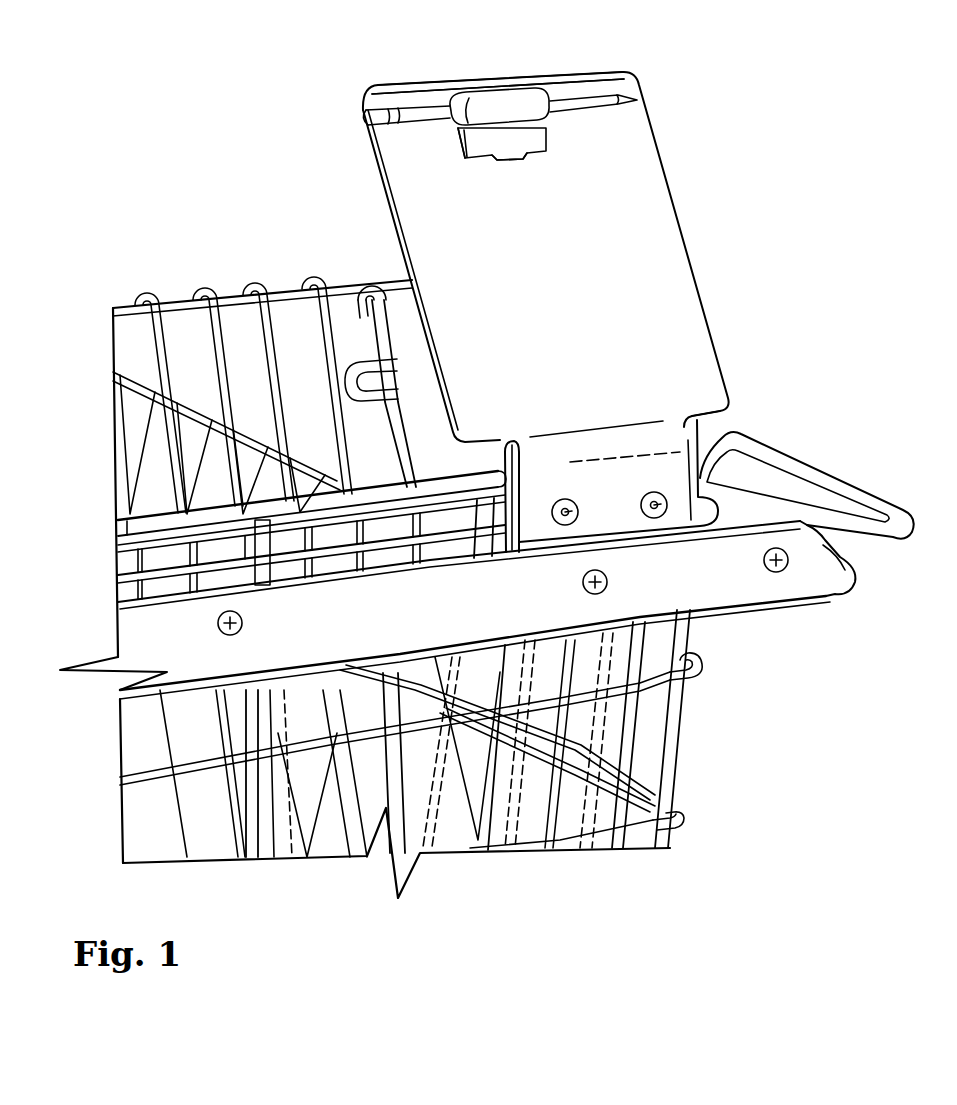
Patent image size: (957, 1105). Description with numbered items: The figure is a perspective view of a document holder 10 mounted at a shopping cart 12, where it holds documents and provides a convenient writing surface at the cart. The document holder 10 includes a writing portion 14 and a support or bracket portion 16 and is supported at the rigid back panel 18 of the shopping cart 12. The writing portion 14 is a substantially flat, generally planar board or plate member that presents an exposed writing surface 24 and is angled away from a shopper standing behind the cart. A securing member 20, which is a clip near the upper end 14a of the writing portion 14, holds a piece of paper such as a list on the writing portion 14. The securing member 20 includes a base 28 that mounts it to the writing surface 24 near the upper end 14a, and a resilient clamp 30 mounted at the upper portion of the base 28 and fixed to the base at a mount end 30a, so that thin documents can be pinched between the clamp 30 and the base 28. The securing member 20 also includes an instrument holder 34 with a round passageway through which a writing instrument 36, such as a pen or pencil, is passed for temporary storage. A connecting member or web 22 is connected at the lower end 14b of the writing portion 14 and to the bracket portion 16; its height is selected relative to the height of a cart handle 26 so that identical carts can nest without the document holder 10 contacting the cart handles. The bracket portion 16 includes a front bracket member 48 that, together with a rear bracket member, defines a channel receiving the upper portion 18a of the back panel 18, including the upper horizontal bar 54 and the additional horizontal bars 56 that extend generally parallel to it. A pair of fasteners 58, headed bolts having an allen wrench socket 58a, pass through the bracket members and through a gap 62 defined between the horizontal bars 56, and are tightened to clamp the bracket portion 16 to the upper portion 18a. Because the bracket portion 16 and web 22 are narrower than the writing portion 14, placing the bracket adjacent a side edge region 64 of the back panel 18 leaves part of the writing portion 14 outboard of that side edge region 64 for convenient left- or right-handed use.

The document holder 10 is at (591, 288).
The shopping cart 12 is at (431, 605).
The writing portion 14 is at (540, 261).
The upper end 14a is at (352, 80).
The lower end 14b is at (737, 390).
The bracket portion 16 is at (713, 471).
The back panel 18 is at (560, 743).
The upper portion of back panel 18a is at (335, 492).
The securing member 20 is at (503, 113).
The connecting web 22 is at (495, 452).
The writing surface 24 is at (442, 228).
The cart handle 26 is at (797, 574).
The base 28 is at (457, 147).
The clamp 30 is at (537, 165).
The mount end 30a is at (520, 160).
The instrument holder 34 is at (506, 76).
The writing instrument 36 is at (607, 98).
The front bracket member 48 is at (493, 527).
The upper horizontal bar 54 is at (137, 530).
The horizontal bars 56 is at (127, 560).
The fasteners 58 is at (589, 510).
The allen wrench socket 58a is at (556, 520).
The gap 62 is at (453, 532).
The side edge region 64 is at (703, 653).